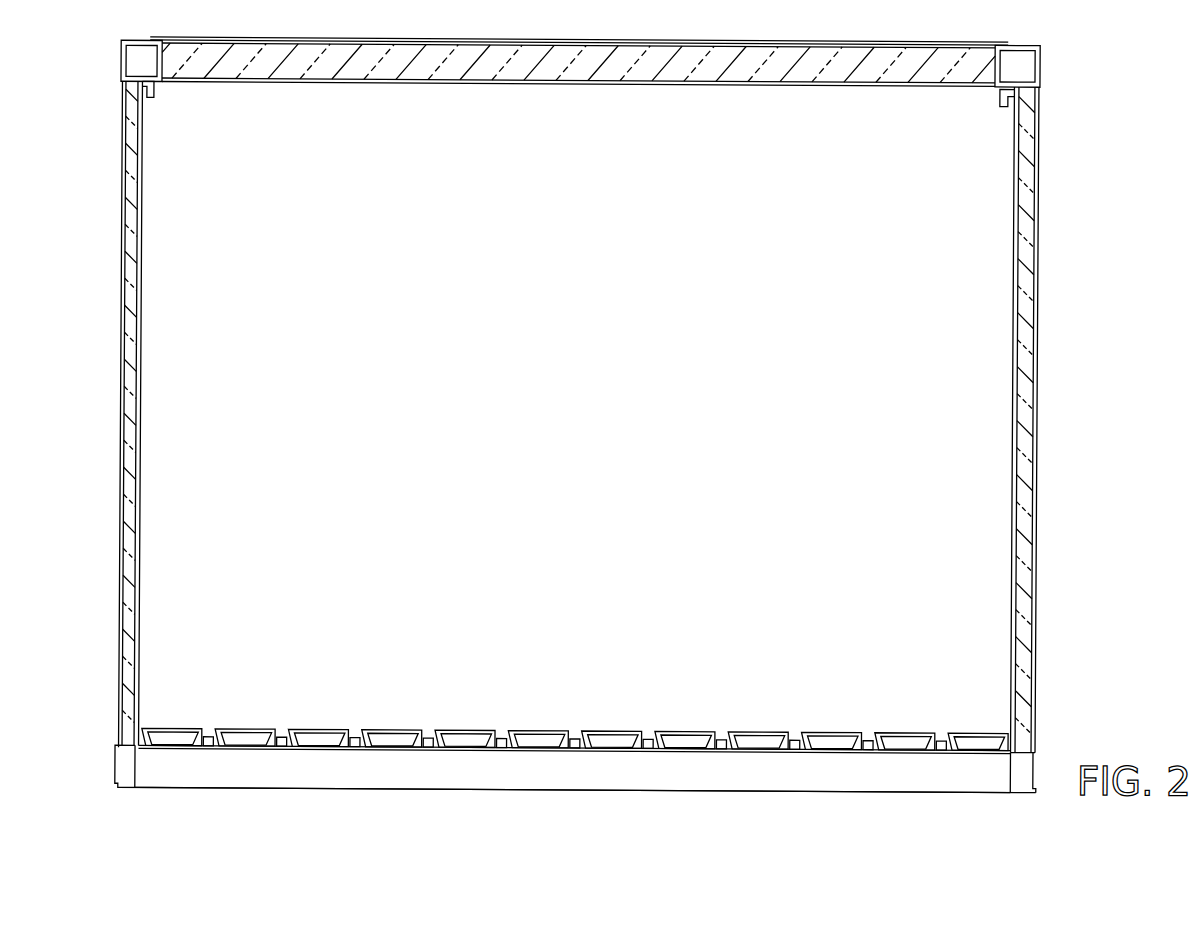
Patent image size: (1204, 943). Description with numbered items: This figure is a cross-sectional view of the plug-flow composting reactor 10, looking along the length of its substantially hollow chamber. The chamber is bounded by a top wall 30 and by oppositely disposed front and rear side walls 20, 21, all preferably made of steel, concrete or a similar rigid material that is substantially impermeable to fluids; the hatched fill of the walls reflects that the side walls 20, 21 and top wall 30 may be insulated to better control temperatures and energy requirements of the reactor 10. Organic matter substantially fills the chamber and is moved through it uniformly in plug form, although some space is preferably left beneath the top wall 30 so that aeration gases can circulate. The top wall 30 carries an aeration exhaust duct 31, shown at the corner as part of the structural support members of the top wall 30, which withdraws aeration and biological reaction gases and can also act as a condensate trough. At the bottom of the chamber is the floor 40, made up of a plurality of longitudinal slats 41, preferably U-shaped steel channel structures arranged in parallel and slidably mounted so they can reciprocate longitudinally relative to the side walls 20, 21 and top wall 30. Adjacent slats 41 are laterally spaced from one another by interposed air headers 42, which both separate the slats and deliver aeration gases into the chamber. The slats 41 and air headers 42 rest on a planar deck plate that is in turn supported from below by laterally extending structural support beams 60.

The plug-flow composting reactor 10 is at (1072, 286).
The front side wall 20 is at (1028, 427).
The rear side wall 21 is at (130, 443).
The top wall 30 is at (672, 72).
The aeration exhaust duct 31 is at (1018, 62).
The floor 40 is at (343, 702).
The longitudinal slats 41 is at (840, 731).
The air headers 42 is at (650, 736).
The structural support beams 60 is at (912, 778).